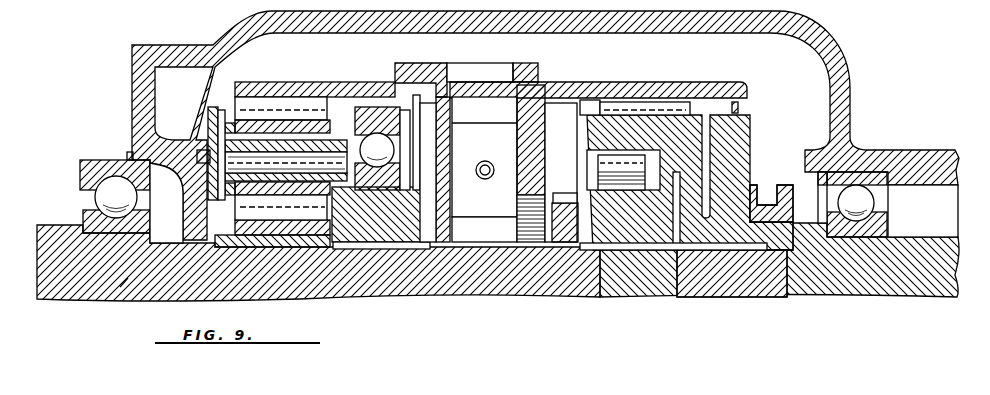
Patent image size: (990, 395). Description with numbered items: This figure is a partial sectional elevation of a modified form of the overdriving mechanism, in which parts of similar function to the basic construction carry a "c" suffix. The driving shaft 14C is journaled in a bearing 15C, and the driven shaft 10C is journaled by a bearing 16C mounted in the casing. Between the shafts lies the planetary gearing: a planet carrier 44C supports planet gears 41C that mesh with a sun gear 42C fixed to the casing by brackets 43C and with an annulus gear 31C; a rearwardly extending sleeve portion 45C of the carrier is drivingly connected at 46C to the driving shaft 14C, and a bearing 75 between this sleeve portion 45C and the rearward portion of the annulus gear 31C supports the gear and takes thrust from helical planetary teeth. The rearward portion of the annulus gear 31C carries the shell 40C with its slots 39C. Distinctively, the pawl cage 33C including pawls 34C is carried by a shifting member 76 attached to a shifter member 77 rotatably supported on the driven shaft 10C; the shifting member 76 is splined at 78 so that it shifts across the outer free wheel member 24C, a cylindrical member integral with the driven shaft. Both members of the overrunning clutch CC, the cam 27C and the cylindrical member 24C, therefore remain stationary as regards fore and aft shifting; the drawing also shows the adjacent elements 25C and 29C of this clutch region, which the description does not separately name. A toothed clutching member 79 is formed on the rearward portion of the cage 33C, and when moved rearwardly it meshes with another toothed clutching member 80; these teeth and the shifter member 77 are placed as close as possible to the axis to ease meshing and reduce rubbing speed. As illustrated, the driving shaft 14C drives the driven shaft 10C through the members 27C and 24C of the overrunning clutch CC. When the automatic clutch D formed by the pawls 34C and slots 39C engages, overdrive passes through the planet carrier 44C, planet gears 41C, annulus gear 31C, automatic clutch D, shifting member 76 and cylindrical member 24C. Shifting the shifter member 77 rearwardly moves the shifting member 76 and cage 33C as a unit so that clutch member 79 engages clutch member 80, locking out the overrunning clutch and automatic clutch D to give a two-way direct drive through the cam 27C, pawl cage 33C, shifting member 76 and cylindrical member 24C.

The driven shaft 10C is at (862, 290).
The driving shaft 14C is at (128, 293).
The bearing 15C is at (100, 192).
The bearing 16C is at (877, 199).
The outer free wheel member 24C is at (622, 118).
The splined shaft 25C is at (622, 190).
The cam 27C is at (593, 250).
The block 29C is at (672, 252).
The annulus gear 31C is at (248, 112).
The pawl cage 33C is at (518, 147).
The pawls 34C is at (484, 218).
The slots 39C is at (483, 76).
The shell 40C is at (418, 73).
The planet gears 41C is at (210, 122).
The sun gear 42C is at (230, 232).
The brackets 43C is at (139, 275).
The planet carrier 44C is at (340, 180).
The sleeve portion 45C is at (365, 232).
The driving connection 46C is at (392, 250).
The bearing 75 is at (372, 133).
The shifting member 76 is at (596, 95).
The shifter member 77 is at (748, 186).
The splines 78 is at (672, 108).
The toothed clutching member 79 is at (534, 245).
The toothed clutching member 80 is at (560, 197).
The overrunning clutch CC is at (640, 159).
The automatic clutch D is at (495, 235).